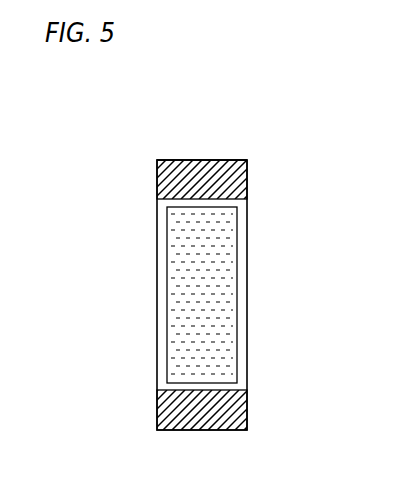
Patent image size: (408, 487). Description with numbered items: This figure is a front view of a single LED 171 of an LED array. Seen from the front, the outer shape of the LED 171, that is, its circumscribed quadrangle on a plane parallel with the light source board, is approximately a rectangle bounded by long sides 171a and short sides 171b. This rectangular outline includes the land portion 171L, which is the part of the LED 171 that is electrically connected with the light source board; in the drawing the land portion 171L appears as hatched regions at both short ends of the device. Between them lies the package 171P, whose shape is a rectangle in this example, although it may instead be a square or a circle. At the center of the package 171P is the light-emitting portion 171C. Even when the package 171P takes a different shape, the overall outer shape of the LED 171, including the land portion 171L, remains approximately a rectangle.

The LED 171 is at (297, 120).
The long sides 171a is at (247, 287).
The short sides 171b is at (212, 159).
The land portion 171L is at (157, 165).
The package 171P is at (167, 250).
The light-emitting portion 171C is at (181, 313).